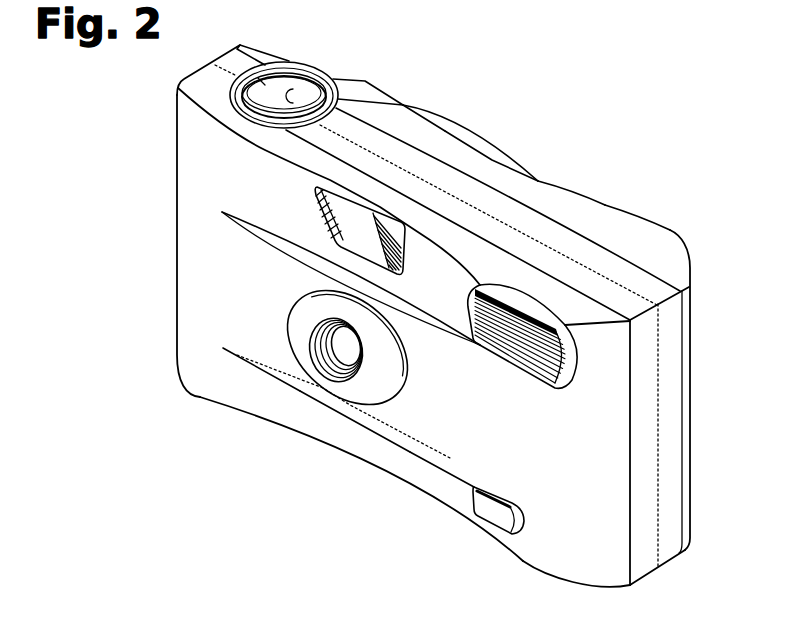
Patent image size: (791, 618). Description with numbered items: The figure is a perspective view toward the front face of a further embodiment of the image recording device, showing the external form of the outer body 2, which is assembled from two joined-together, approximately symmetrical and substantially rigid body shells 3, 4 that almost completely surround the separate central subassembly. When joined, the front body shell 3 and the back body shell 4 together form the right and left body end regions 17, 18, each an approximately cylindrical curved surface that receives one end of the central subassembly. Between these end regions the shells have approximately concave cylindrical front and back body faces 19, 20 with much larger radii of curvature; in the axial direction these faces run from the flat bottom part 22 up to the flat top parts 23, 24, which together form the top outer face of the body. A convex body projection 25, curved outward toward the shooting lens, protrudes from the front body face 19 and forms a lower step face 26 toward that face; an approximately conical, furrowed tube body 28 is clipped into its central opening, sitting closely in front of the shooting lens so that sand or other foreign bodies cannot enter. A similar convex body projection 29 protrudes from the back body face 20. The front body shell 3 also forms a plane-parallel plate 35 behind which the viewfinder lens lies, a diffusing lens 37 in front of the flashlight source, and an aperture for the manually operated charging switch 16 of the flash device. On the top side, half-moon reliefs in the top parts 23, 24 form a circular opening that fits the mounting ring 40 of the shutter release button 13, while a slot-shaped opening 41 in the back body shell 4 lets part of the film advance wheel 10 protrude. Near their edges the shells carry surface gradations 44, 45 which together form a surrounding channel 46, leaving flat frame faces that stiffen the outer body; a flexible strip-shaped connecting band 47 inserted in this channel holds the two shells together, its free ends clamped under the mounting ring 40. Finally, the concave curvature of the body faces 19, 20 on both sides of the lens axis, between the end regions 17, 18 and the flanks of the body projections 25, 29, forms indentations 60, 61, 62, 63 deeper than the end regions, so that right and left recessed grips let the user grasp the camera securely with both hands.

The outer body 2 is at (683, 217).
The front body shell 3 is at (372, 450).
The back body shell 4 is at (637, 242).
The film advance wheel 10 is at (285, 60).
The shutter release button 13 is at (236, 48).
The charging switch 16 is at (489, 509).
The right body end region 17 is at (200, 293).
The left body end region 18 is at (593, 543).
The front body face 19 is at (257, 390).
The back body face 20 is at (491, 158).
The bottom part 22 is at (315, 257).
The top part 23 is at (200, 107).
The top part 24 is at (595, 218).
The body projection 25 is at (410, 337).
The lower step face 26 is at (320, 398).
The tube body 28 is at (313, 348).
The body projection 29 is at (476, 130).
The plane-parallel plate 35 is at (313, 203).
The diffusing lens 37 is at (532, 353).
The mounting ring 40 is at (336, 100).
The slot-shaped opening 41 is at (348, 76).
The surface gradation 44 is at (632, 487).
The surface gradation 45 is at (683, 347).
The channel 46 is at (645, 520).
The connecting band 47 is at (674, 437).
The indentation 60 is at (213, 352).
The indentation 61 is at (458, 435).
The indentation 62 is at (404, 105).
The indentation 63 is at (560, 187).